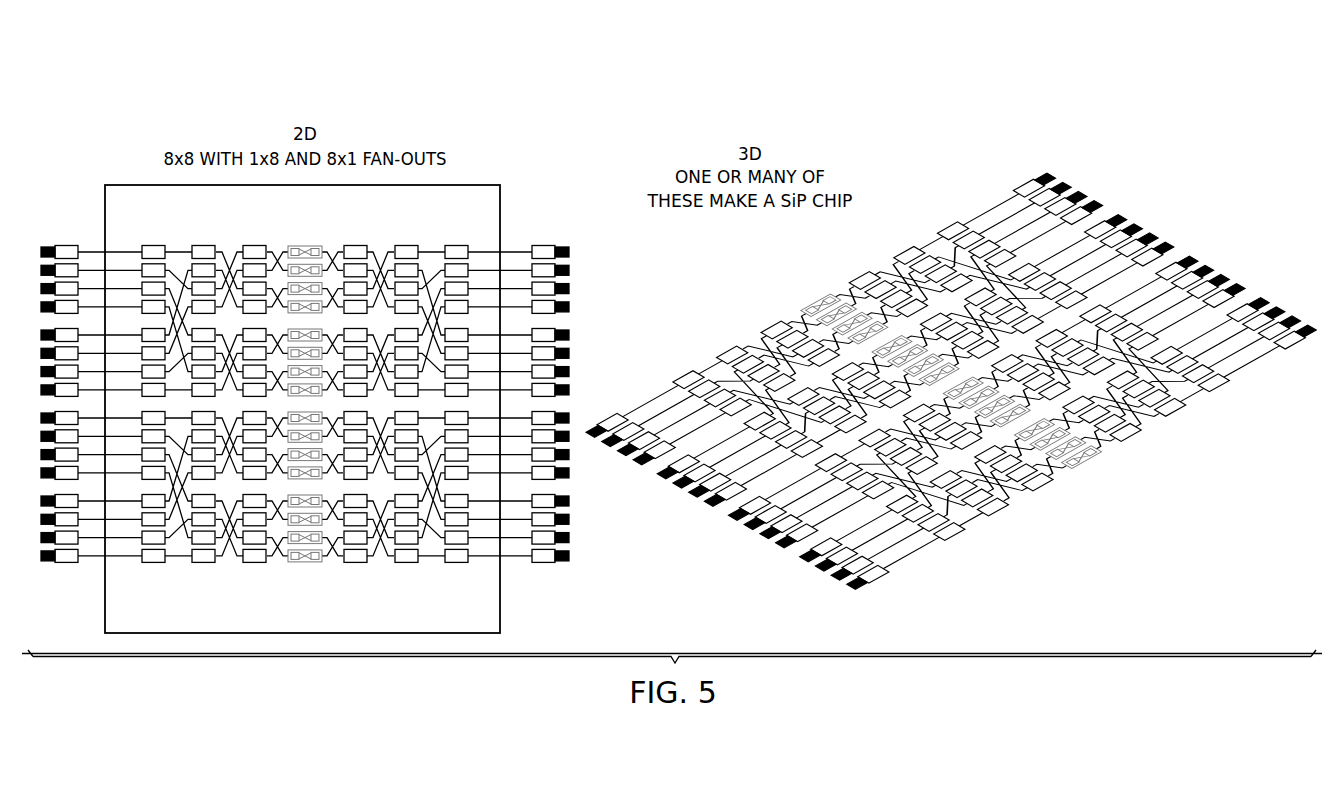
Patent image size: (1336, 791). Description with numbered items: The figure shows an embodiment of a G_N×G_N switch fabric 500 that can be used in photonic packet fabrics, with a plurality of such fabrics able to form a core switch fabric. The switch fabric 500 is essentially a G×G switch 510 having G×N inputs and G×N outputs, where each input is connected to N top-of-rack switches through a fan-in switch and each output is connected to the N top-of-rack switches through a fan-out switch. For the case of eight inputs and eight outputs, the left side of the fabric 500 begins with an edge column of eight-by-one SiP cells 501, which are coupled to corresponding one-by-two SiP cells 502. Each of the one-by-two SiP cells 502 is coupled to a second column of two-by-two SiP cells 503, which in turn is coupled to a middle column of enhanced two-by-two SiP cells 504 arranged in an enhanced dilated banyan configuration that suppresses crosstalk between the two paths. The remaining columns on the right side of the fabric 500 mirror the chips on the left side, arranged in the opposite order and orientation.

The G_N×G_N switch fabric 500 is at (458, 66).
The 8×1 SiP cells 501 is at (878, 578).
The 1×2 SiP cells 502 is at (951, 535).
The 2×2 SiP cells 503 is at (998, 512).
The enhanced 2×2 SiP cells 504 is at (1084, 463).
The G×G switch 510 is at (132, 180).